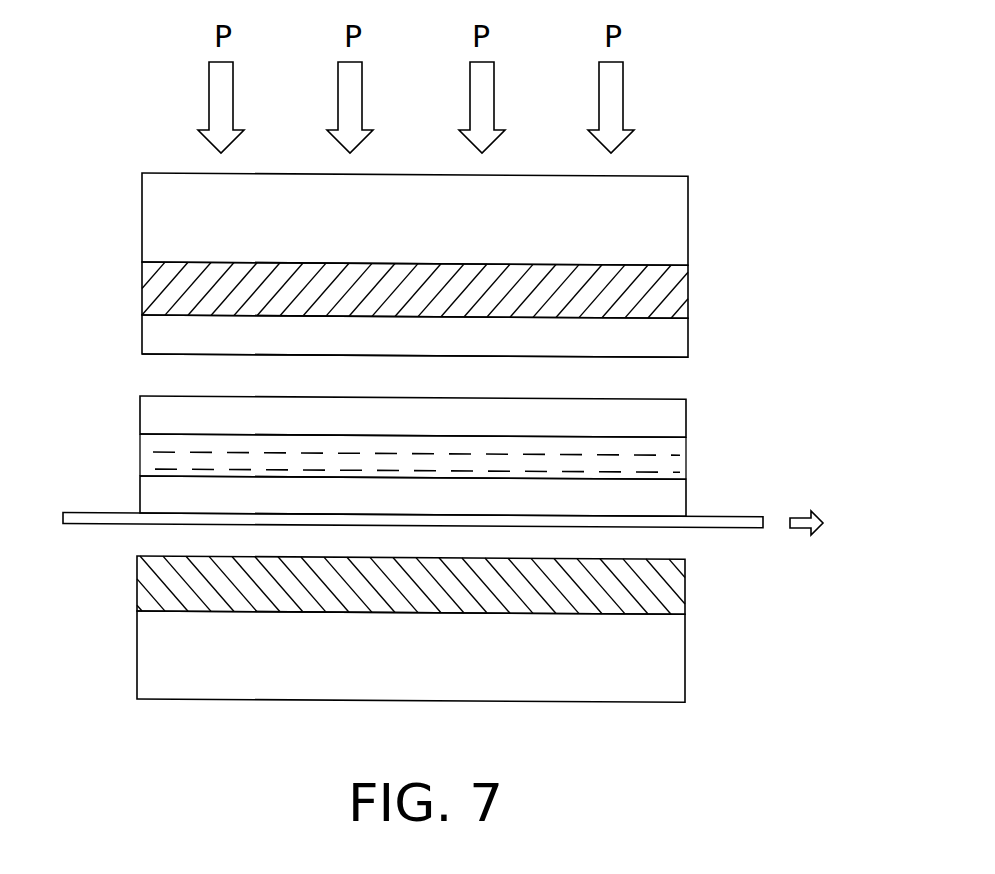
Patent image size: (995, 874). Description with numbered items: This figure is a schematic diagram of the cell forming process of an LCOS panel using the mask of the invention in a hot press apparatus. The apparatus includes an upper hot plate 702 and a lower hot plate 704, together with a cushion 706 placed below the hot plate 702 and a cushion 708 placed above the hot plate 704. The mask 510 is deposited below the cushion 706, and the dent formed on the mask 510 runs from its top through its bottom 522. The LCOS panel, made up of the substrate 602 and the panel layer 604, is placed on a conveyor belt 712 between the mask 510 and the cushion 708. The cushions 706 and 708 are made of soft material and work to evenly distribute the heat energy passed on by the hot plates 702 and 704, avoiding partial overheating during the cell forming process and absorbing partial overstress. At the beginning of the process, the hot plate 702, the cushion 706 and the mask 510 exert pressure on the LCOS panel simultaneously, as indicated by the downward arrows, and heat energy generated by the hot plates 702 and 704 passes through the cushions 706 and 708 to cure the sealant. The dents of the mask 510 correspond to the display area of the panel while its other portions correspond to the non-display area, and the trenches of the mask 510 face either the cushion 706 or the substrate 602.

The hot plate 702 is at (688, 220).
The cushion 706 is at (688, 292).
The mask 510 is at (688, 337).
The bottom 522 is at (143, 356).
The substrate 602 is at (140, 417).
The LCOS panel 604 is at (140, 497).
The conveyor belt 712 is at (728, 517).
The cushion 708 is at (685, 583).
The hot plate 704 is at (685, 670).